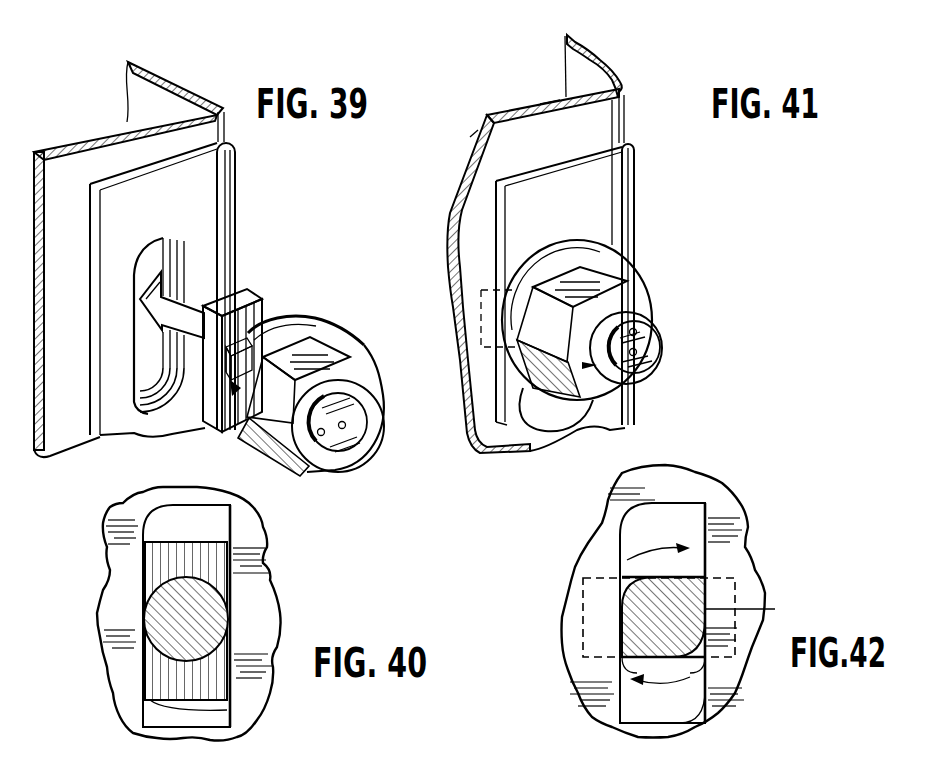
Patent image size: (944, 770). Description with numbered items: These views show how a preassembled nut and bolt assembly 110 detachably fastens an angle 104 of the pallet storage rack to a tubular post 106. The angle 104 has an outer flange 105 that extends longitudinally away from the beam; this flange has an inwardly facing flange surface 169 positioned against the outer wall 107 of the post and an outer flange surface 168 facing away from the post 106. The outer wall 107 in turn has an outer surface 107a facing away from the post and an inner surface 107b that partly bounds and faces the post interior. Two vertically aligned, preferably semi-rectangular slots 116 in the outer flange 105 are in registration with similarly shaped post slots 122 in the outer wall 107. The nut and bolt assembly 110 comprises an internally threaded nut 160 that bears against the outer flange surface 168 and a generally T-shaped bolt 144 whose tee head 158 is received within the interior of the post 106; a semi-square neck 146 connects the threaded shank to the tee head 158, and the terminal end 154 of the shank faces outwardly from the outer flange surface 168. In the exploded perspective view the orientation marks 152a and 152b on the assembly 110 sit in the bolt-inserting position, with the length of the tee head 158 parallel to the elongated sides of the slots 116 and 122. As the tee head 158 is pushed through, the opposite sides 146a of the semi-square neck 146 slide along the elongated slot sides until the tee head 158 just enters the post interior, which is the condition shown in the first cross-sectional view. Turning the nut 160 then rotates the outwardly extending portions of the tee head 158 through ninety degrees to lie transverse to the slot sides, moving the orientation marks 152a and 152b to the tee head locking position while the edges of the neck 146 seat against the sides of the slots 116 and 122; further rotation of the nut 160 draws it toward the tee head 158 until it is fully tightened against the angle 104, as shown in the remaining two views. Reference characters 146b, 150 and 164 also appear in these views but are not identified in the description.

In FIG. 39, the angle 104 is at (237, 188).
In FIG. 41, the angle 104 is at (637, 163).
In FIG. 40, the angle 104 is at (257, 532).
In FIG. 42, the angle 104 is at (743, 523).
In FIG. 39, the outer flange 105 is at (95, 250).
In FIG. 41, the outer flange 105 is at (495, 204).
In FIG. 39, the tubular post 106 is at (165, 79).
In FIG. 41, the tubular post 106 is at (588, 50).
In FIG. 39, the outer wall 107 is at (34, 150).
In FIG. 41, the outer wall 107 is at (450, 288).
In FIG. 41, the outer surface 107a is at (531, 112).
In FIG. 41, the inner surface 107b is at (476, 136).
In FIG. 39, the nut and bolt assembly 110 is at (215, 412).
In FIG. 41, the nut and bolt assembly 110 is at (608, 256).
In FIG. 39, the slots 116 is at (157, 437).
In FIG. 41, the slots 116 is at (575, 437).
In FIG. 40, the slots 116 is at (220, 717).
In FIG. 42, the slots 116 is at (700, 716).
In FIG. 39, the post slots 122 is at (197, 258).
In FIG. 39, the bolt 144 is at (205, 385).
In FIG. 41, the bolt 144 is at (545, 372).
In FIG. 39, the semi-square neck 146 is at (197, 415).
In FIG. 40, the semi-square neck 146 is at (212, 622).
In FIG. 42, the semi-square neck 146 is at (617, 612).
In FIG. 40, the opposite sides of semi-square neck 146a is at (170, 603).
In FIG. 42, the opposite sides of semi-square neck 146a is at (627, 668).
In FIG. 39, the flat portion of pin 146b is at (237, 282).
In FIG. 40, the flat portion of pin 146b is at (170, 577).
In FIG. 42, the flat portion of pin 146b is at (617, 633).
In FIG. 39, the locking block 150 is at (258, 322).
In FIG. 40, the locking block 150 is at (153, 670).
In FIG. 42, the locking block 150 is at (700, 667).
In FIG. 39, the orientation mark 152a is at (323, 436).
In FIG. 41, the orientation mark 152a is at (636, 330).
In FIG. 39, the orientation mark 152b is at (345, 425).
In FIG. 41, the orientation mark 152b is at (637, 352).
In FIG. 39, the terminal end 154 is at (358, 452).
In FIG. 41, the terminal end 154 is at (648, 337).
In FIG. 39, the tee head 158 is at (245, 293).
In FIG. 40, the tee head 158 is at (228, 583).
In FIG. 42, the tee head 158 is at (735, 578).
In FIG. 39, the nut 160 is at (317, 353).
In FIG. 41, the nut 160 is at (620, 403).
In FIG. 39, the round flange 164 is at (357, 402).
In FIG. 41, the round flange 164 is at (655, 378).
In FIG. 41, the outer flange surface 168 is at (618, 184).
In FIG. 41, the inwardly facing flange surface 169 is at (583, 157).